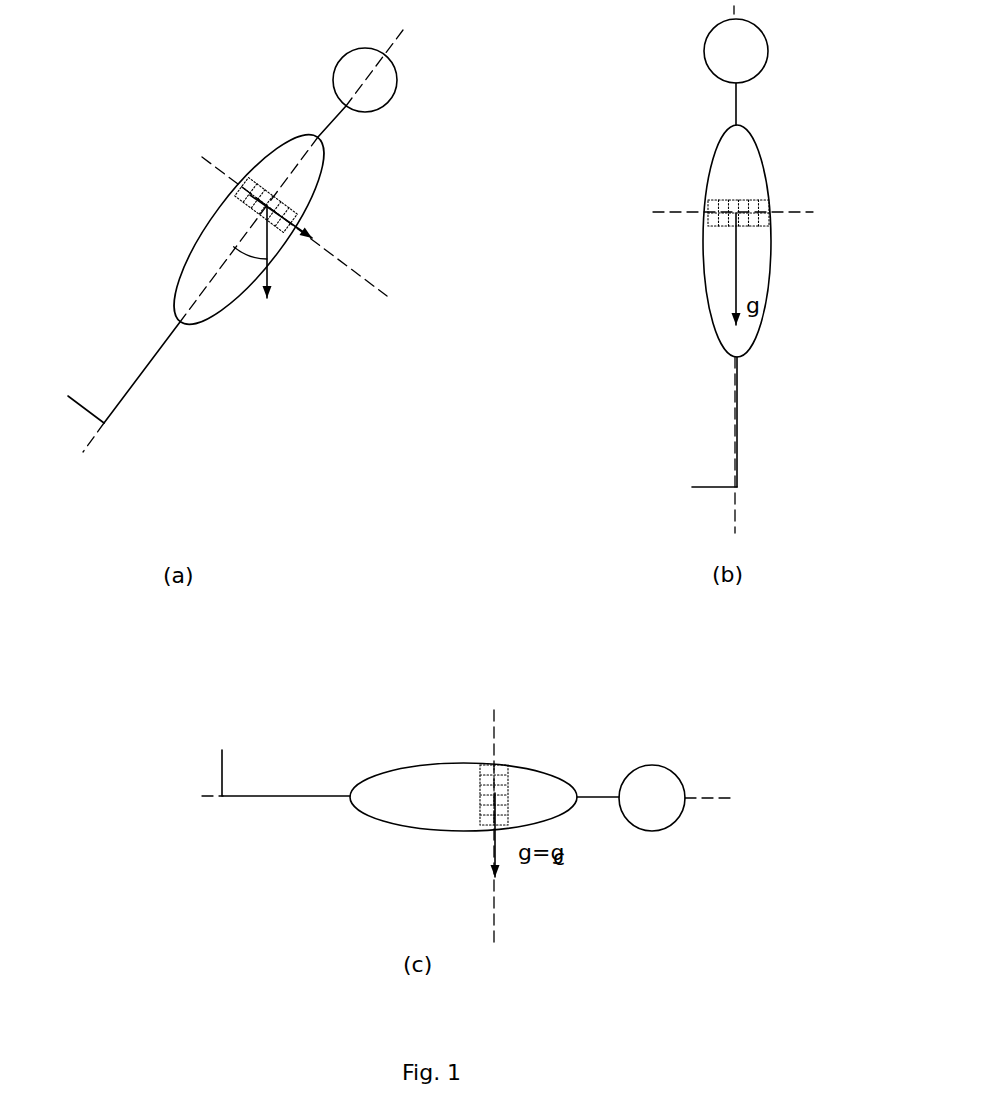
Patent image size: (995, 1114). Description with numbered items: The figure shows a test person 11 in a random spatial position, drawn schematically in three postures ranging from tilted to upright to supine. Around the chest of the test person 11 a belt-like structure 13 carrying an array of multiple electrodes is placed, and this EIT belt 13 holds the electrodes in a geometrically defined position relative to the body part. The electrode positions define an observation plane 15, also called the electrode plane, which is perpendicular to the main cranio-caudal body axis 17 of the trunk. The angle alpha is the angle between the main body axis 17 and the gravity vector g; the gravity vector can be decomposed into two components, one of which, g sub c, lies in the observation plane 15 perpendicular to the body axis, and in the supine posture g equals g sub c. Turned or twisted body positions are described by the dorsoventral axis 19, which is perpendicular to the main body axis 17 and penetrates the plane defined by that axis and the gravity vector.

The test person 11 is at (96, 45).
The belt-like structure 13 is at (247, 177).
The observation plane 15 is at (203, 162).
The main cranio-caudal body axis 17 is at (90, 442).
The dorsoventral axis 19 is at (207, 168).